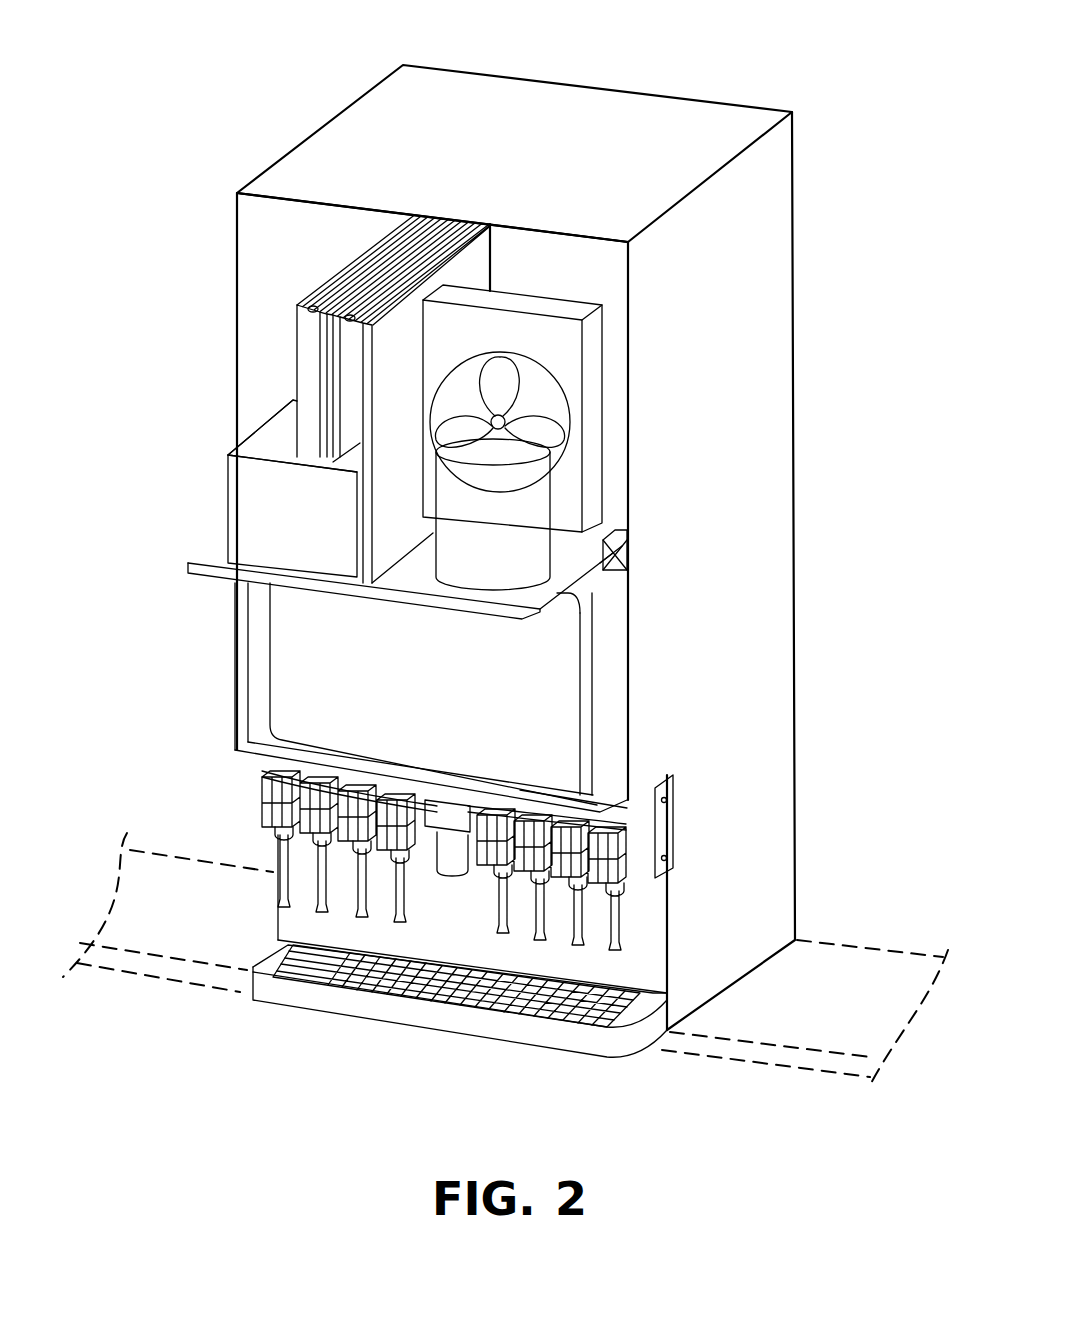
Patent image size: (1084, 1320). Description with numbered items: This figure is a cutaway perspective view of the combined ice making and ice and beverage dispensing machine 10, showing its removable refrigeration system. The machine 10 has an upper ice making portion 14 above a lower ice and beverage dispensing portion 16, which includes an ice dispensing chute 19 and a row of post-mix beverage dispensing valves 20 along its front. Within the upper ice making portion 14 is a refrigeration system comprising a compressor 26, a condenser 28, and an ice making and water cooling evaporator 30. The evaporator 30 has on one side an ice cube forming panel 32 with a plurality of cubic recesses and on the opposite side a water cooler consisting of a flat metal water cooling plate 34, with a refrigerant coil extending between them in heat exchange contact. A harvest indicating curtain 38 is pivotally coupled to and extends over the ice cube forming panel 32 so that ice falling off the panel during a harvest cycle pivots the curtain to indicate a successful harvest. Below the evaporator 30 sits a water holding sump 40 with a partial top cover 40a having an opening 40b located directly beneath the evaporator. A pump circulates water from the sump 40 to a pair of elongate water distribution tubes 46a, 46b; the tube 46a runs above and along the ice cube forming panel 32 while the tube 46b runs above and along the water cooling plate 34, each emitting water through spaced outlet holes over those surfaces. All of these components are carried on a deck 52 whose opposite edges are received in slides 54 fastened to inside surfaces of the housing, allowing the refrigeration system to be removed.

The combined ice making and ice and beverage dispensing machine 10 is at (297, 97).
The upper ice making portion 14 is at (168, 277).
The lower ice and beverage dispensing portion 16 is at (190, 660).
The ice dispensing chute 19 is at (450, 865).
The post-mix beverage dispensing valves 20 is at (270, 790).
The compressor 26 is at (514, 544).
The condenser 28 is at (519, 347).
The ice making and water cooling evaporator 30 is at (318, 410).
The ice cube forming panel 32 is at (322, 375).
The water cooling plate 34 is at (333, 435).
The harvest indicating curtain 38 is at (297, 343).
The water holding sump 40 is at (316, 531).
The partial top cover 40a is at (257, 450).
The opening 40b is at (303, 457).
The water distribution tube 46a is at (318, 302).
The water distribution tube 46b is at (352, 318).
The deck 52 is at (478, 608).
The slides 54 is at (628, 565).